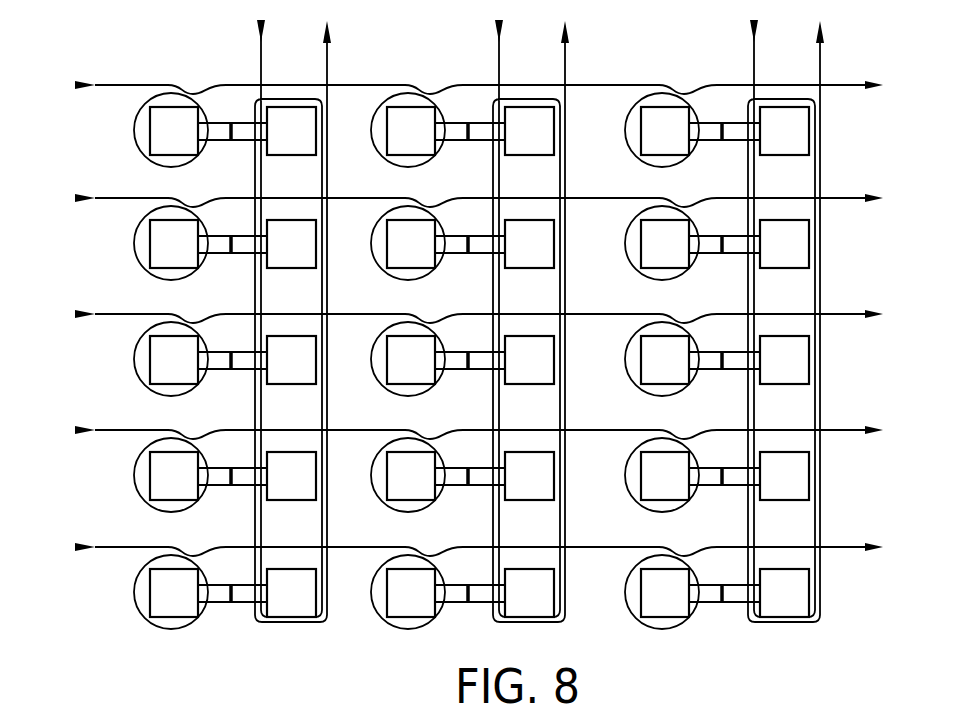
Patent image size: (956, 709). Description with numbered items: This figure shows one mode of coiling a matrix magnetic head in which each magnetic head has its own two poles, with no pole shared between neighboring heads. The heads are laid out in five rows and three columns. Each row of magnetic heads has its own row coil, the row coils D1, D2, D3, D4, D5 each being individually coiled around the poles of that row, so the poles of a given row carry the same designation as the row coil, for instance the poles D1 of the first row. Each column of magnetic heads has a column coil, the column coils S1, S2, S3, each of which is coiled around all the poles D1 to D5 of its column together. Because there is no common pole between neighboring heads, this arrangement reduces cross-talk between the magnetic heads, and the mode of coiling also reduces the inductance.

The row coil D1 is at (460, 121).
The row coil D2 is at (460, 234).
The row coil D3 is at (460, 350).
The row coil D4 is at (460, 466).
The row coil D5 is at (460, 583).
The column coil S1 is at (293, 319).
The column coil S2 is at (531, 319).
The column coil S3 is at (786, 319).